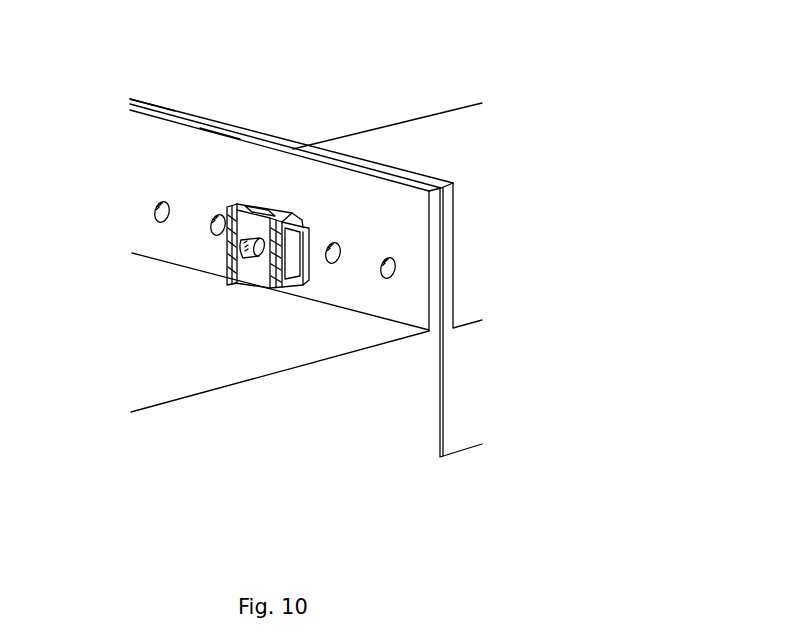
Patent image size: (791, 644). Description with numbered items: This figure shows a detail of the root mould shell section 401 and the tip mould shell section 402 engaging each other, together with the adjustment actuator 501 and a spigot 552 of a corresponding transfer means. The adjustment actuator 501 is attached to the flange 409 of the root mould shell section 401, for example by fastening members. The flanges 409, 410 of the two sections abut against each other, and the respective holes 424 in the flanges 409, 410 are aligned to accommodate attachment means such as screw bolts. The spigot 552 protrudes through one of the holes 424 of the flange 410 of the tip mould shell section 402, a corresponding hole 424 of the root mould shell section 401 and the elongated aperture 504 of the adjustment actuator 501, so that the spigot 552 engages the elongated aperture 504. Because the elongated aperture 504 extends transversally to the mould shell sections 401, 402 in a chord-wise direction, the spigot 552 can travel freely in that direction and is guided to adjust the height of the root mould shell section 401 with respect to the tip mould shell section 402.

The root mould shell section 401 is at (198, 351).
The tip mould shell section 402 is at (430, 156).
The flange 409 is at (150, 117).
The flange 410 is at (216, 121).
The holes 424 is at (333, 247).
The adjustment actuator 501 is at (213, 190).
The elongated aperture 504 is at (250, 237).
The spigot 552 is at (232, 268).